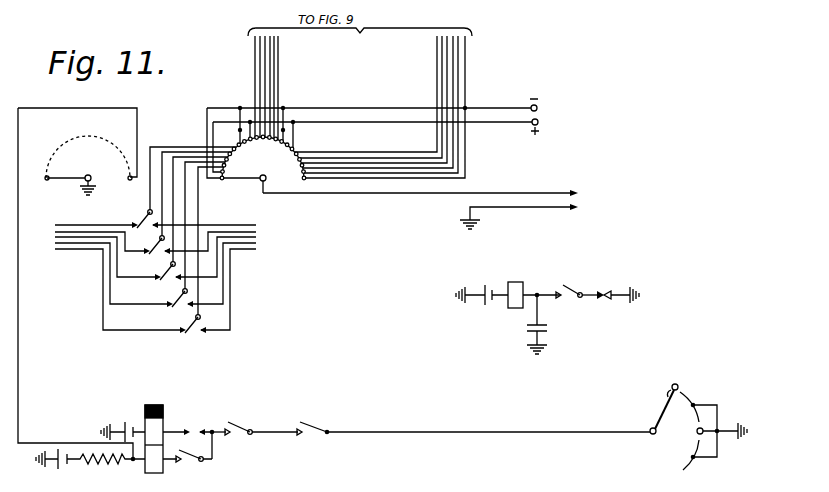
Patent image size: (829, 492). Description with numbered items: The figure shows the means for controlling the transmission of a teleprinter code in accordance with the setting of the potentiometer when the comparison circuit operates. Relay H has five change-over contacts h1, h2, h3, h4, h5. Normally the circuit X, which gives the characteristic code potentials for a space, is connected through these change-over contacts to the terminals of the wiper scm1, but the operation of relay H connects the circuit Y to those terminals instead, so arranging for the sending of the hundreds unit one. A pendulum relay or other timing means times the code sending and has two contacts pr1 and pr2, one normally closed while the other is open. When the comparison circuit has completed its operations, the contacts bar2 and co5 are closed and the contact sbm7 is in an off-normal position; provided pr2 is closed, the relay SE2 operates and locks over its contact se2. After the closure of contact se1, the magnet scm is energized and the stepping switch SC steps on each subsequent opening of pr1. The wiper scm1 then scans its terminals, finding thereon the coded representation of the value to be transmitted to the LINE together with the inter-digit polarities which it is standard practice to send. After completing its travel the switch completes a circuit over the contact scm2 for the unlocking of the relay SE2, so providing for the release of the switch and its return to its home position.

The scm2 contact scm2 is at (77, 151).
The scm1 wiper scm1 is at (263, 164).
The change-over contact h1 is at (183, 187).
The change-over contact h2 is at (187, 203).
The change-over contact h3 is at (191, 218).
The change-over contact h4 is at (195, 234).
The change-over contact h5 is at (201, 250).
The circuit X is at (105, 277).
The circuit Y is at (215, 277).
The line LINE is at (420, 202).
The magnet SCM scm is at (508, 308).
The se1 contact se1 is at (576, 280).
The pendulum relay contact pr1 is at (616, 282).
The relay SE SE2 is at (160, 391).
The pendulum relay contact pr2 is at (187, 421).
The se2 contact se2 is at (188, 458).
The co5 contact co5 is at (255, 420).
The bar2 contact bar2 is at (473, 420).
The sbm7 contact sbm7 is at (692, 427).